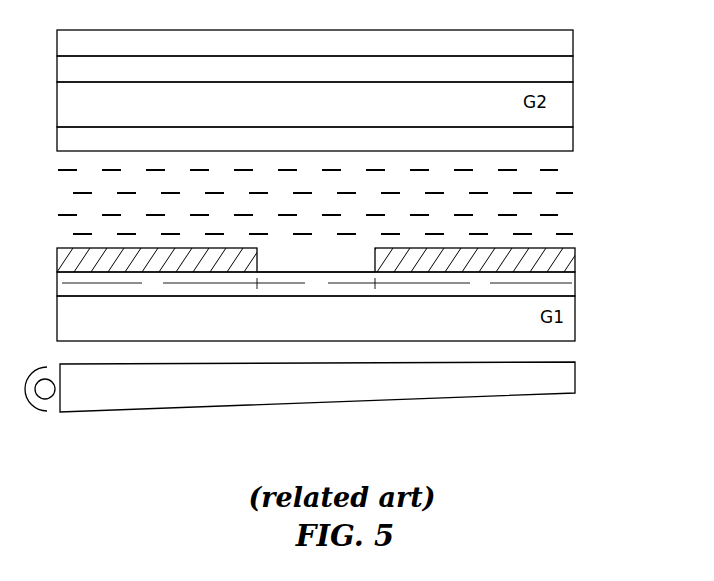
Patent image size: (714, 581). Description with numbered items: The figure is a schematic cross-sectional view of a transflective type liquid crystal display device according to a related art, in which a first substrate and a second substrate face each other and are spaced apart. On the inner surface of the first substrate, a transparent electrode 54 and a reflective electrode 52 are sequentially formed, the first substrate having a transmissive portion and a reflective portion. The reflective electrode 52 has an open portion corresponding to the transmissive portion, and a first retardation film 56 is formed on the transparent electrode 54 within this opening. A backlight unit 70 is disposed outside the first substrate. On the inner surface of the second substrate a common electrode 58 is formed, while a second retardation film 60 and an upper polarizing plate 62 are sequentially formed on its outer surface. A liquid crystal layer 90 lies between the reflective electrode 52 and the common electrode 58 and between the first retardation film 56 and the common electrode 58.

The reflective electrode 52 is at (582, 259).
The transparent electrode 54 is at (577, 289).
The first retardation film 56 is at (358, 266).
The common electrode 58 is at (565, 138).
The second retardation film 60 is at (568, 63).
The upper polarizing plate 62 is at (565, 41).
The backlight unit 70 is at (572, 380).
The liquid crystal layer 90 is at (580, 203).